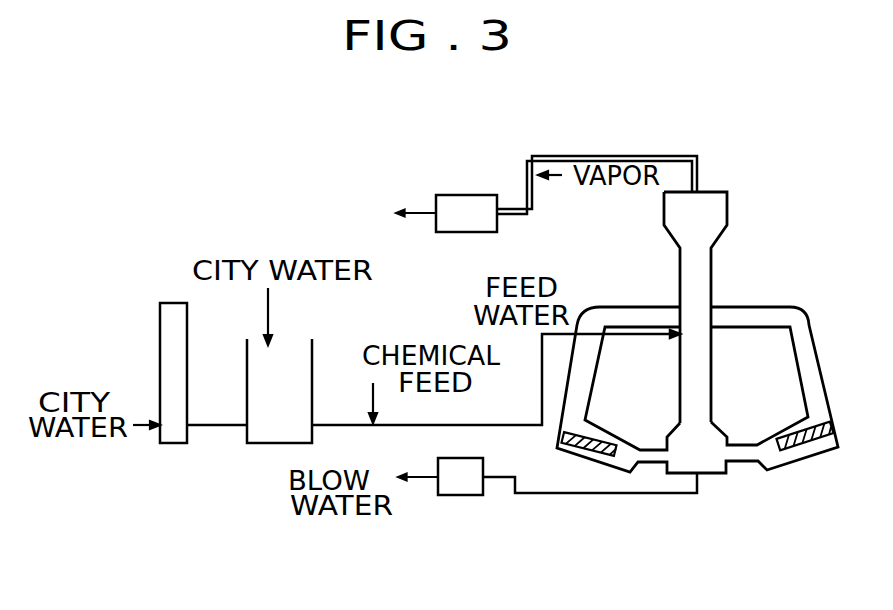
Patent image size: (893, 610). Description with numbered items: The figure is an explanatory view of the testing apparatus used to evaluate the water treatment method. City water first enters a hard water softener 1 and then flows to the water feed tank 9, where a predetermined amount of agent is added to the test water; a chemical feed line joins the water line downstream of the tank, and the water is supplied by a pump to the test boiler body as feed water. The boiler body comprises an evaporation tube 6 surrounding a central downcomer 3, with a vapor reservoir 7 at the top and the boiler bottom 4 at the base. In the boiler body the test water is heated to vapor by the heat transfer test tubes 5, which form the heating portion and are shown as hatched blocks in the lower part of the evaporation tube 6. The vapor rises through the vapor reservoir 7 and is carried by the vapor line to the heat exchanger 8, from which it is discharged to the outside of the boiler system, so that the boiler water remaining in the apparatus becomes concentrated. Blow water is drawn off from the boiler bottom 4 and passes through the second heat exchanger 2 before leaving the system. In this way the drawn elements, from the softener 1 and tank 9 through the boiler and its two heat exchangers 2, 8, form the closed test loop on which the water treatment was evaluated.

The hard water softener 1 is at (170, 445).
The heat exchanger 2 is at (465, 497).
The downcomer 3 is at (710, 380).
The boiler bottom 4 is at (718, 475).
The heat transfer test tube 5 is at (815, 422).
The evaporation tube 6 is at (764, 302).
The vapor reservoir 7 is at (697, 235).
The heat exchanger 8 is at (468, 195).
The water feed tank 9 is at (312, 357).